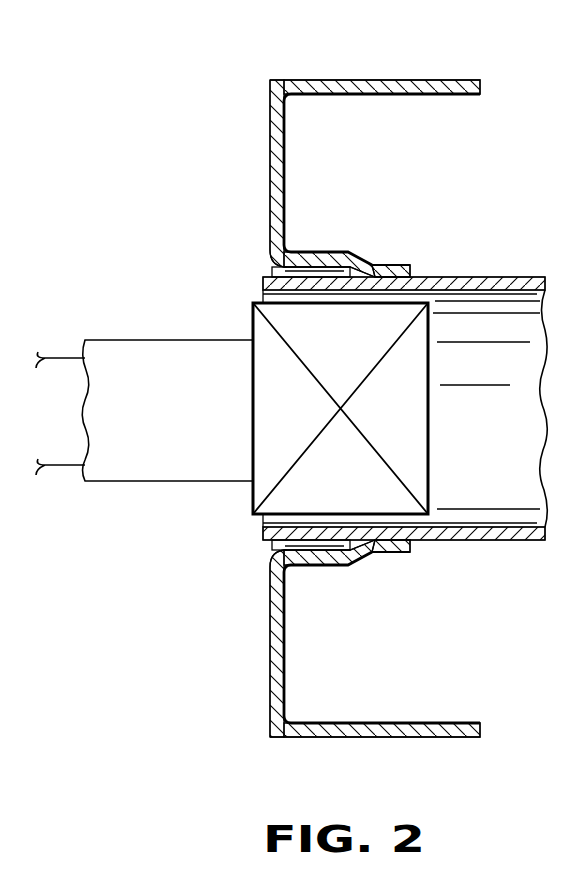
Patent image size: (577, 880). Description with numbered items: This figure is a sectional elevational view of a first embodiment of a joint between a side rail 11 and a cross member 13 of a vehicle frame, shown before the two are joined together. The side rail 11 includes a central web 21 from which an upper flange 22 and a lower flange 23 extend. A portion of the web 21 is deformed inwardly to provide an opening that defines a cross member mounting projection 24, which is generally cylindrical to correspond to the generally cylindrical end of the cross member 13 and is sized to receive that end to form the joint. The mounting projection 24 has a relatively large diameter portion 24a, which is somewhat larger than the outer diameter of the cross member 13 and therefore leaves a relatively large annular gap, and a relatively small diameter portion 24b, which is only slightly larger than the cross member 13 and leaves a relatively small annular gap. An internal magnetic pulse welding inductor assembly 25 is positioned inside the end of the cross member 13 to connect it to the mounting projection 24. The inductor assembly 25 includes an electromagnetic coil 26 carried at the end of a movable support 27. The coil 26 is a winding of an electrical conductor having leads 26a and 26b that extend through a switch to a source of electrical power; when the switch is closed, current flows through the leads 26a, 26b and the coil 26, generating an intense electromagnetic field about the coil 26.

The side rail 11 is at (349, 418).
The cross member 13 is at (510, 277).
The central web 21 is at (277, 178).
The upper flange 22 is at (385, 80).
The lower flange 23 is at (423, 735).
The cross member mounting projection 24 is at (384, 406).
The relatively large diameter portion 24a is at (322, 255).
The relatively small diameter portion 24b is at (400, 263).
The internal magnetic pulse welding inductor assembly 25 is at (157, 292).
The electromagnetic coil 26 is at (272, 455).
The lead 26a is at (50, 356).
The lead 26b is at (55, 470).
The movable support 27 is at (152, 470).